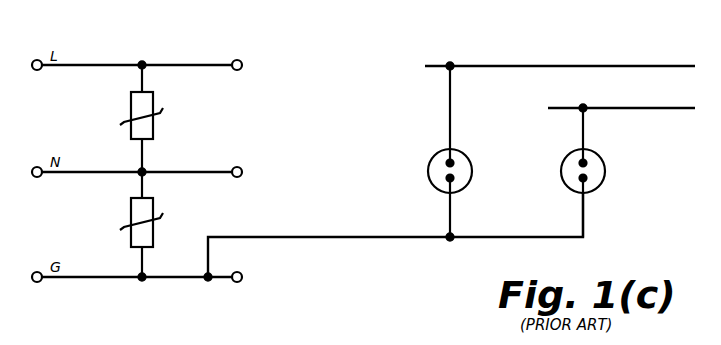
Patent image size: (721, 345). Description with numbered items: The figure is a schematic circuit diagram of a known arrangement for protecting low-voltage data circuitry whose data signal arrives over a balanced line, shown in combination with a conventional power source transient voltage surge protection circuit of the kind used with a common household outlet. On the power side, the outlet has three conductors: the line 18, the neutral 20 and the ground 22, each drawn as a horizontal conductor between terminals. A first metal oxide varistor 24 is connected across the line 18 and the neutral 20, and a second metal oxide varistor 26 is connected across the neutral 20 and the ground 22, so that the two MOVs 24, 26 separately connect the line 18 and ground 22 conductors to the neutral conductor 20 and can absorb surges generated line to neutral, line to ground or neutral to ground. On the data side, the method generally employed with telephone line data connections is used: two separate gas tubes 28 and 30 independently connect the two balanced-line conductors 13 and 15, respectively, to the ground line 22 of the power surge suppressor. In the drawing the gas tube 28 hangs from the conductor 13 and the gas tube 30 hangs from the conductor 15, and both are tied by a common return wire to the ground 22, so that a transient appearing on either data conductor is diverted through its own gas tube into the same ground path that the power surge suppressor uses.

The conductor 13 is at (646, 64).
The conductor 15 is at (684, 113).
The line 18 is at (193, 63).
The neutral 20 is at (193, 170).
The ground 22 is at (175, 280).
The first metal oxide varistor 24 is at (130, 98).
The second metal oxide varistor 26 is at (130, 201).
The gas tube 28 is at (428, 159).
The gas tube 30 is at (600, 151).